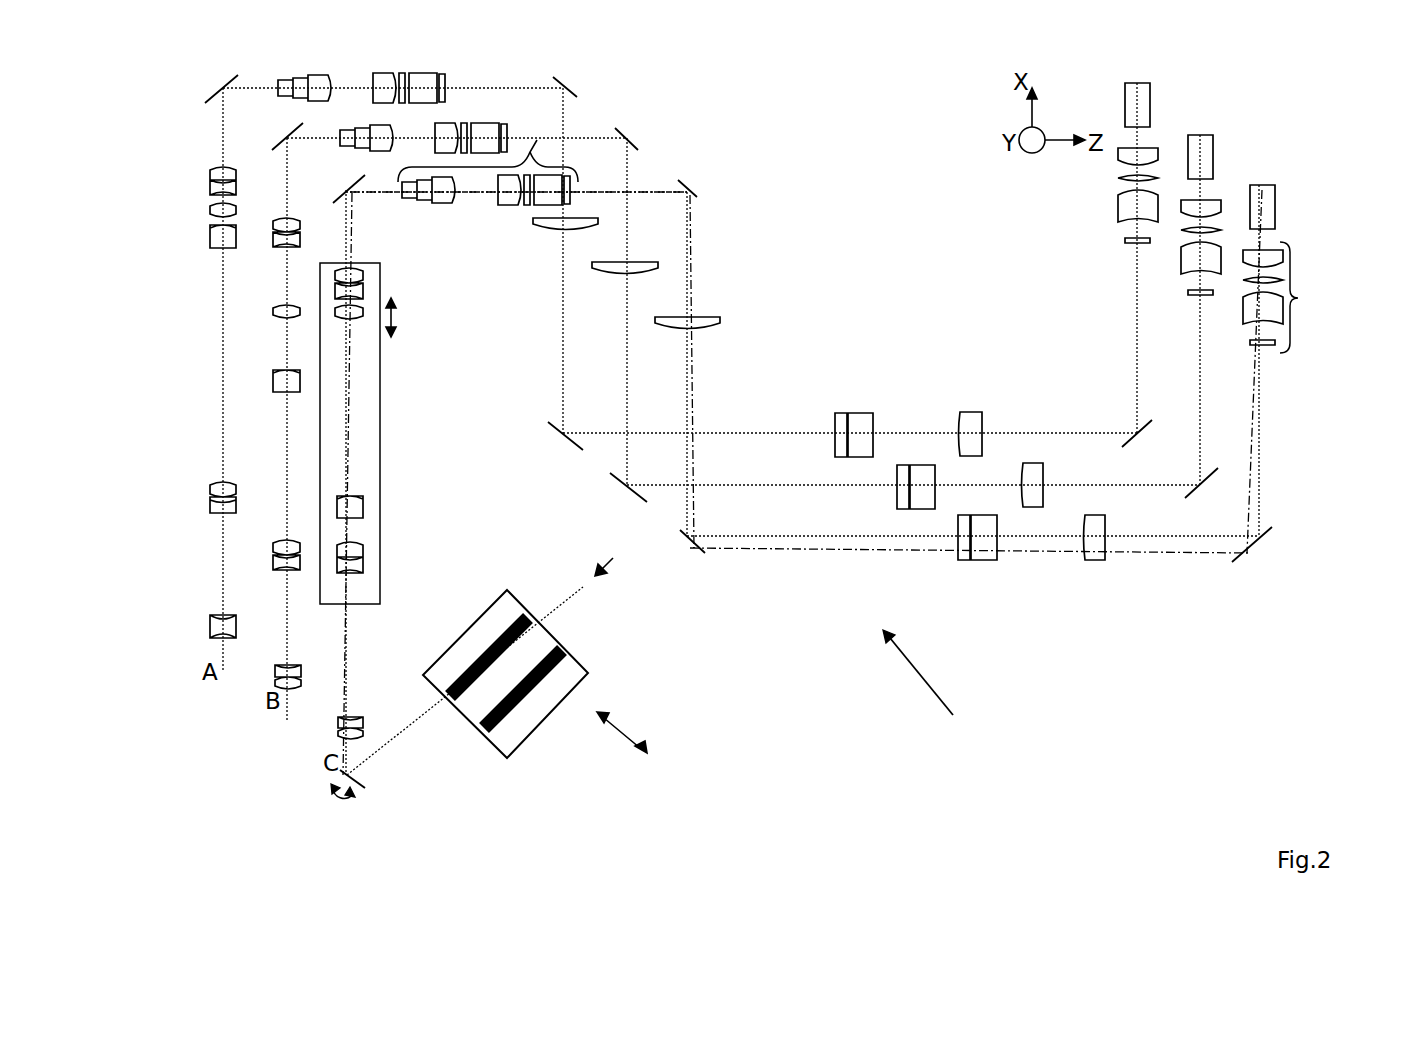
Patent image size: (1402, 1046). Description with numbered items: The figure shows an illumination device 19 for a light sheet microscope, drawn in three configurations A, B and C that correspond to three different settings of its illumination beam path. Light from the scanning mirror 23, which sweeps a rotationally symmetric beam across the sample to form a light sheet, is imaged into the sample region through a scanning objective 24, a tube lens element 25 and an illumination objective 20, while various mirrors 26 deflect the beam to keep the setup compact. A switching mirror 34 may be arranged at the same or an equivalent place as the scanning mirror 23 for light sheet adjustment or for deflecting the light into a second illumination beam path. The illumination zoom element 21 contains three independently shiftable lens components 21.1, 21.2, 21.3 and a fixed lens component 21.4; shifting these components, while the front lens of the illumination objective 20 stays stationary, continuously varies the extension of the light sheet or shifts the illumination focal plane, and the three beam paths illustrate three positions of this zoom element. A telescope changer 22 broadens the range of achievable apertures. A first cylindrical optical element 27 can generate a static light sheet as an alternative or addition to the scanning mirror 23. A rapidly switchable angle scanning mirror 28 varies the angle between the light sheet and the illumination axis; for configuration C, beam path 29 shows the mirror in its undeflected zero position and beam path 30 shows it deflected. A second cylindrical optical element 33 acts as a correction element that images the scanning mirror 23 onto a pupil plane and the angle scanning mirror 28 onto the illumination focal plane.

The illumination device 19 is at (937, 686).
The illumination objective 20 is at (1290, 269).
The illumination zoom element 21 is at (398, 433).
The shiftable lens component 21.1 is at (361, 282).
The shiftable lens component 21.2 is at (358, 320).
The shiftable lens component 21.3 is at (363, 510).
The fixed lens component 21.4 is at (363, 560).
The telescope changer 22 is at (570, 681).
The scanning mirror 23 is at (406, 213).
The scanning objective 24 is at (537, 140).
The tube lens element 25 is at (1093, 553).
The mirrors 26 is at (1252, 547).
The first cylindrical optical element 27 is at (357, 717).
The angle scanning mirror 28 is at (365, 787).
The beam path 29 is at (1260, 413).
The beam path 30 is at (1248, 482).
The second cylindrical optical element 33 is at (720, 323).
The switching mirror 34 is at (357, 193).